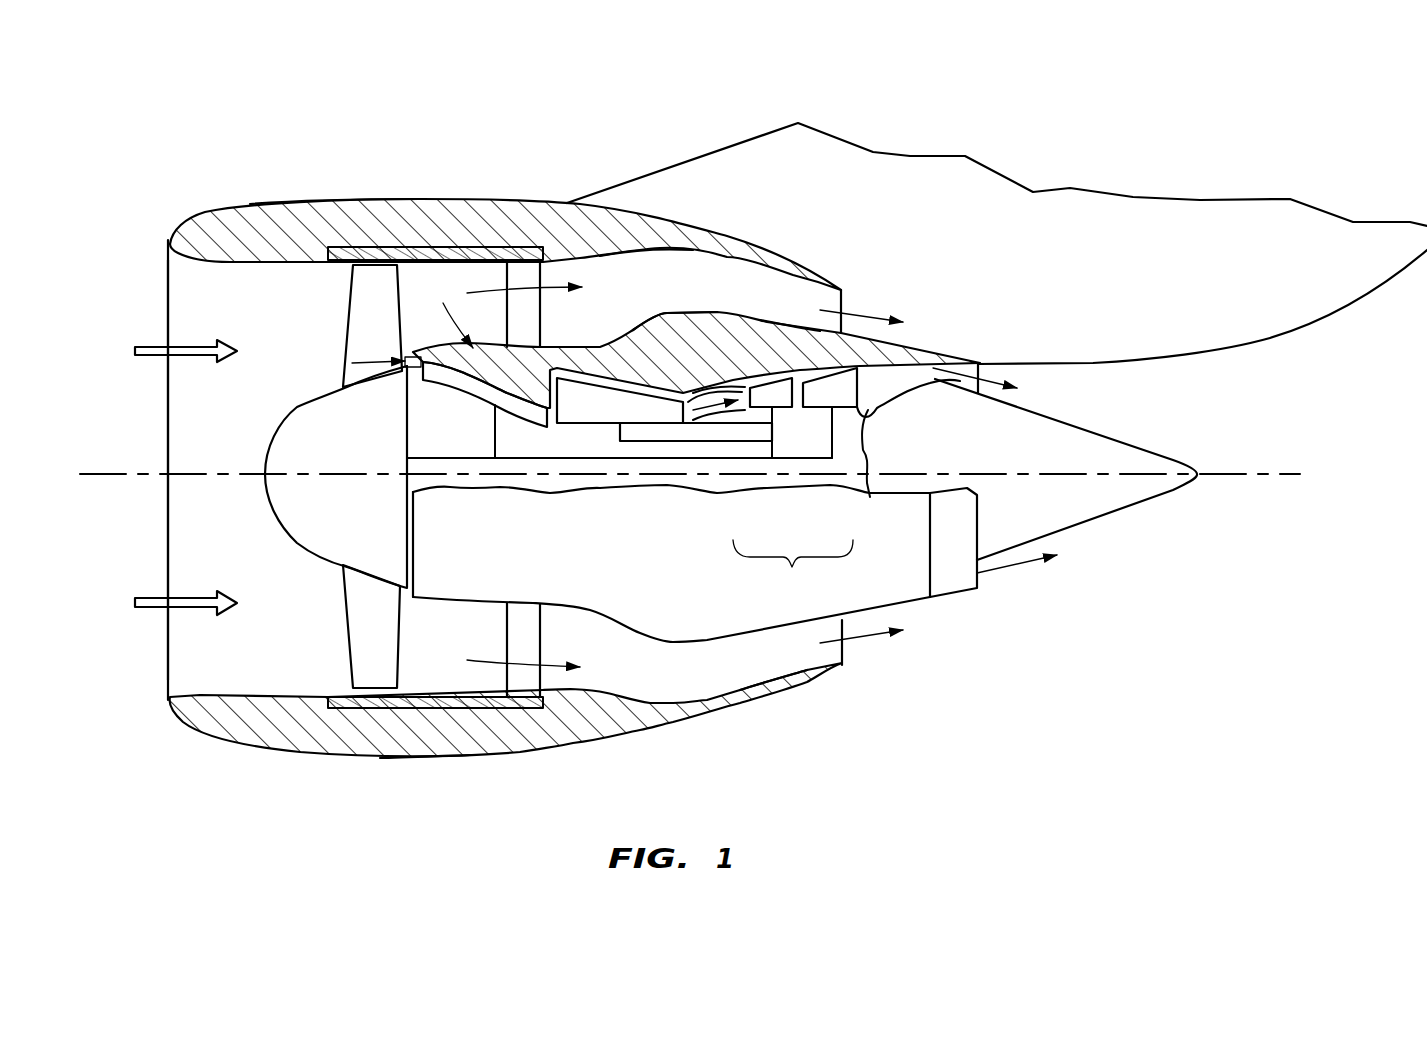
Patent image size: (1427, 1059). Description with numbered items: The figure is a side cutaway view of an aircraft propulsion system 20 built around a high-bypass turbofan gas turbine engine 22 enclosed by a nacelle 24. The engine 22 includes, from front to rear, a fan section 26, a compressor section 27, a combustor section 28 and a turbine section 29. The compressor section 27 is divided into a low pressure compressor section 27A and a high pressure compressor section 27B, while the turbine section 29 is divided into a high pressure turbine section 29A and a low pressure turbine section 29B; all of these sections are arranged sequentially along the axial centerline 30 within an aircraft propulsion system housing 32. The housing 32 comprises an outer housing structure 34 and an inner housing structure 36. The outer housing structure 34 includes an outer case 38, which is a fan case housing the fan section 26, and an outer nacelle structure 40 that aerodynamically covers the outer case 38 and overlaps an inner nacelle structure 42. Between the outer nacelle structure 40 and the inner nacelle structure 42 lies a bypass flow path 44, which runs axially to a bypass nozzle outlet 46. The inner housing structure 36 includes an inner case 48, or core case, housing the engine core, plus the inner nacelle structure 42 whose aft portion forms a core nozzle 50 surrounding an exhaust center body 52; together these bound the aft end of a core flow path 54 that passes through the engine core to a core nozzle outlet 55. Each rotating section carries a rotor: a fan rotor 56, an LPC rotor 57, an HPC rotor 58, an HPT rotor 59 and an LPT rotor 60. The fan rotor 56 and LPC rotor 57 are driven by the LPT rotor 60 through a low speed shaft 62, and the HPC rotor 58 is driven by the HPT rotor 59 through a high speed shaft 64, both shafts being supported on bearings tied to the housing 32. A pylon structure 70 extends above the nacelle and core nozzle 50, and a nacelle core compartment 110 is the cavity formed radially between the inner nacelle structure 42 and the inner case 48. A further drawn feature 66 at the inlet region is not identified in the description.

The aircraft propulsion system 20 is at (207, 133).
The gas turbine engine 22 is at (258, 416).
The nacelle 24 is at (428, 190).
The fan section 26 is at (325, 670).
The compressor section 27 is at (680, 527).
The low pressure compressor section 27A is at (412, 321).
The high pressure compressor section 27B is at (622, 345).
The combustor section 28 is at (727, 432).
The turbine section 29 is at (793, 573).
The high pressure turbine section 29A is at (776, 358).
The low pressure turbine section 29B is at (838, 352).
The axial centerline 30 is at (1268, 487).
The aircraft propulsion system housing 32 is at (522, 760).
The outer housing structure 34 is at (425, 765).
The inner housing structure 36 is at (757, 647).
The outer case 38 is at (353, 248).
The outer nacelle structure 40 is at (383, 199).
The inner nacelle structure 42 is at (717, 322).
The bypass flow path 44 is at (590, 335).
The bypass nozzle outlet 46 is at (843, 652).
The inner case 48 is at (620, 370).
The core nozzle 50 is at (953, 587).
The exhaust center body 52 is at (1073, 528).
The core flow path 54 is at (894, 392).
The core nozzle outlet 55 is at (980, 366).
The fan rotor 56 is at (330, 565).
The LPC rotor 57 is at (452, 392).
The HPC rotor 58 is at (582, 423).
The HPT rotor 59 is at (777, 407).
The LPT rotor 60 is at (873, 427).
The low speed shaft 62 is at (783, 410).
The high speed shaft 64 is at (653, 442).
The engine inlet 66 is at (167, 295).
The pylon structure 70 is at (735, 141).
The nacelle core compartment 110 is at (735, 356).